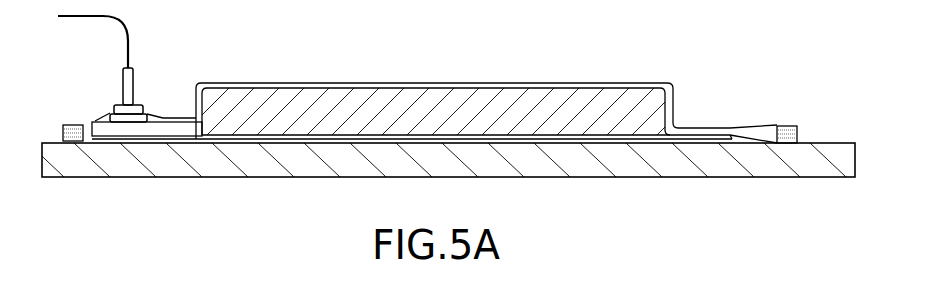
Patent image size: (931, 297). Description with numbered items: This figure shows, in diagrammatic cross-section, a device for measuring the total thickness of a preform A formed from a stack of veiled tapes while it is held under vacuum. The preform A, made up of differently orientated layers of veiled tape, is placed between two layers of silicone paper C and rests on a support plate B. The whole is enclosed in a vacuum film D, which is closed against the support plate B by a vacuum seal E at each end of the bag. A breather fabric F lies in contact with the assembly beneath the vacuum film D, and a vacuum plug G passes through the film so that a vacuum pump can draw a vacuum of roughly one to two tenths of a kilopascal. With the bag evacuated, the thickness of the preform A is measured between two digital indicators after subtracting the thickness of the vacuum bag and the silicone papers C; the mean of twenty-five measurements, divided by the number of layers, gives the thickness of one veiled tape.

The preform A is at (623, 118).
The support plate B is at (527, 161).
The silicone paper C is at (333, 133).
The vacuum film D is at (507, 82).
The vacuum seal E is at (62, 127).
The breather fabric F is at (136, 133).
The vacuum plug G is at (135, 82).